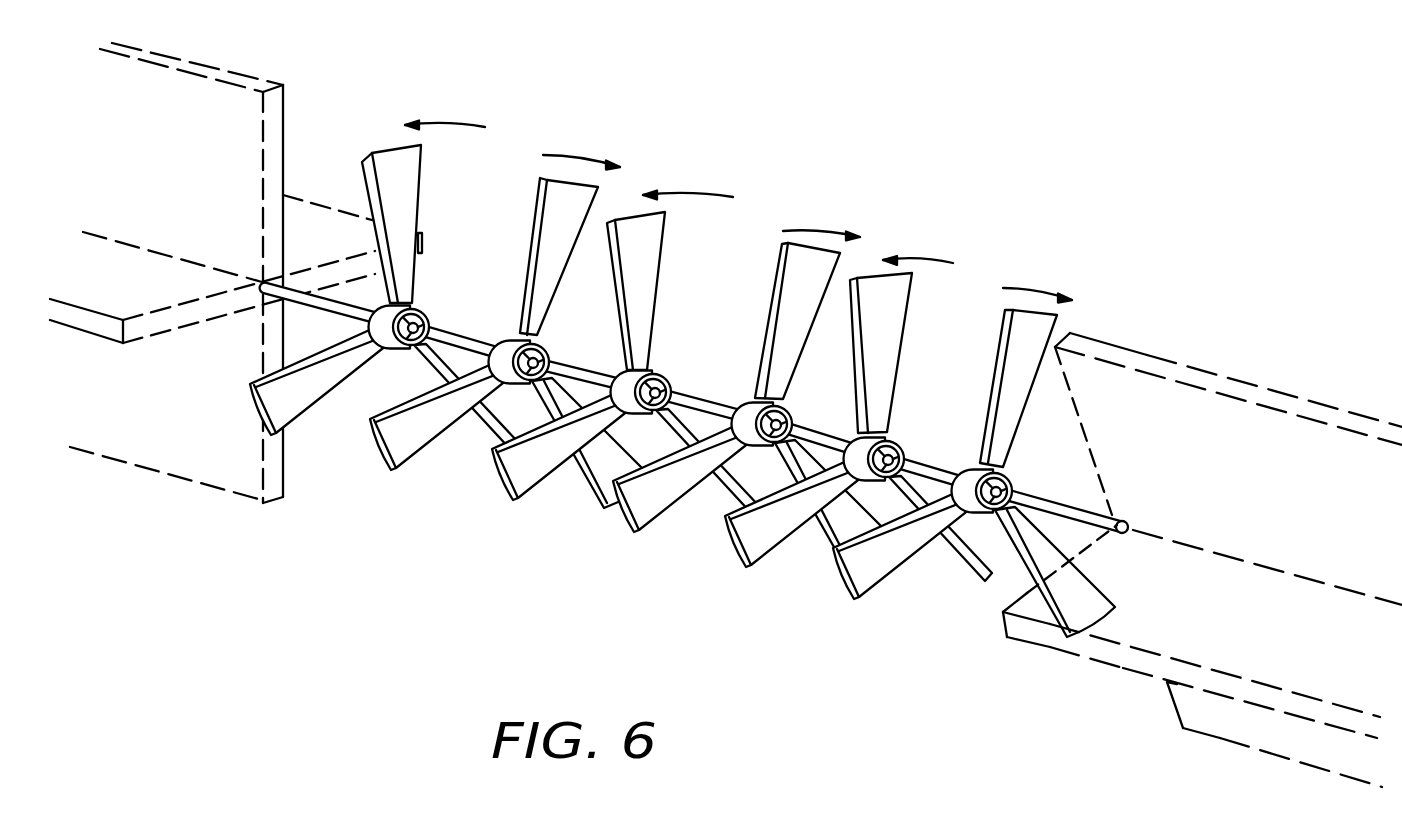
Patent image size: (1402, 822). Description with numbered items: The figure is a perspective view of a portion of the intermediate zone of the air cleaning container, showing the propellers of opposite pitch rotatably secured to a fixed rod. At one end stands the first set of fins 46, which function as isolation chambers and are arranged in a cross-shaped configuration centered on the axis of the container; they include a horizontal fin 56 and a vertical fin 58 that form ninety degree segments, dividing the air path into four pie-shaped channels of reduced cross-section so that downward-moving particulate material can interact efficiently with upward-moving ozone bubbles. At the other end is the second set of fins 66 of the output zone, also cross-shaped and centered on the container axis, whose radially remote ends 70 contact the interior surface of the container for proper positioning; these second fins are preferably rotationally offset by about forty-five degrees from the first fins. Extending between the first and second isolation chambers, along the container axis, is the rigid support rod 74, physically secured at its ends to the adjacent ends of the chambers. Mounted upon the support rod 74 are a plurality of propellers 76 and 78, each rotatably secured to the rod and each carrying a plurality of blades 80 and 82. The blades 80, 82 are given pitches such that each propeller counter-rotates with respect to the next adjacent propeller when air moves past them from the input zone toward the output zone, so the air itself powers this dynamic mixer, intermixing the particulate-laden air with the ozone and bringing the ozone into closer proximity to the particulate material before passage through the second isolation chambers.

The first set of fins 46 is at (250, 73).
The horizontal fin 56 is at (333, 253).
The vertical fin 58 is at (283, 147).
The second set of fins 66 is at (1153, 390).
The radially remote ends 70 is at (1273, 402).
The support rod 74 is at (453, 327).
The propeller 76 is at (412, 435).
The propeller 78 is at (305, 402).
The blade 80 is at (800, 320).
The blade 82 is at (643, 312).